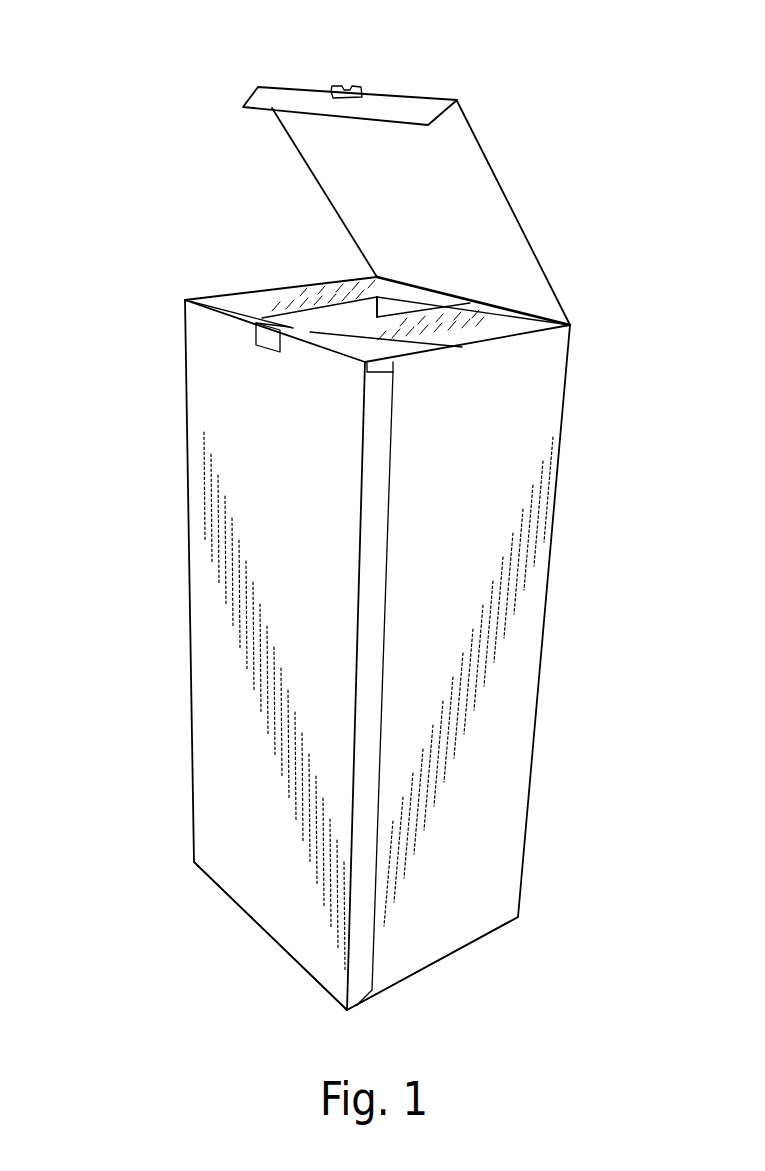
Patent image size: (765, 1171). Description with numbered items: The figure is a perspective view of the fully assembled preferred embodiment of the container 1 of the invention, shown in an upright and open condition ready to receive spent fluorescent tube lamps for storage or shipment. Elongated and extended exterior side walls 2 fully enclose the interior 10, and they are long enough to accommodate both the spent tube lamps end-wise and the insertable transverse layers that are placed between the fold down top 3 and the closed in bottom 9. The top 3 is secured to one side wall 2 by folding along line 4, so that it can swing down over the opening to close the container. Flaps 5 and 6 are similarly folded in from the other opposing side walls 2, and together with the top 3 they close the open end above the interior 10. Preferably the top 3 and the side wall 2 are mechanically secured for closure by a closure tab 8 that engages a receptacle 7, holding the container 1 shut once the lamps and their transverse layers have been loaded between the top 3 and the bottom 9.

The container 1 is at (118, 265).
The exterior side walls 2 is at (217, 618).
The fold down top 3 is at (560, 272).
The fold line 4 is at (552, 311).
The flap 5 is at (280, 288).
The flap 6 is at (483, 341).
The receptacle 7 is at (335, 78).
The closure tab 8 is at (250, 347).
The closed in bottom 9 is at (450, 965).
The interior 10 is at (358, 310).